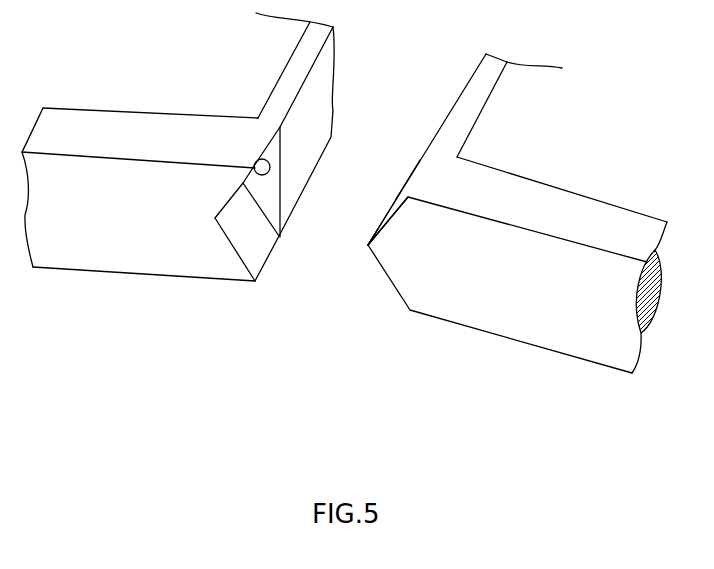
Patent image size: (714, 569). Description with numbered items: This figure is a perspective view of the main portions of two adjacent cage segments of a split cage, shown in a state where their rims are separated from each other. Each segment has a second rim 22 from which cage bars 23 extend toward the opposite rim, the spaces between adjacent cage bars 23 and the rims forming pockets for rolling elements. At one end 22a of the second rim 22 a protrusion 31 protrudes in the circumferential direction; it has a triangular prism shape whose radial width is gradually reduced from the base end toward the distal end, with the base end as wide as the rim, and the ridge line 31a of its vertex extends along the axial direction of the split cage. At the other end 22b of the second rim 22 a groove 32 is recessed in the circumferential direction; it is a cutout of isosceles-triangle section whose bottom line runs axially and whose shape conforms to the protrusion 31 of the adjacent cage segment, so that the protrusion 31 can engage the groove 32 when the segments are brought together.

The second rim 22 is at (112, 250).
The one end of the second rim 22a is at (412, 177).
The other end of the second rim 22b is at (260, 158).
The cage bar 23 is at (295, 70).
The protrusion 31 is at (393, 200).
The ridge line 31a is at (377, 219).
The groove 32 is at (258, 253).